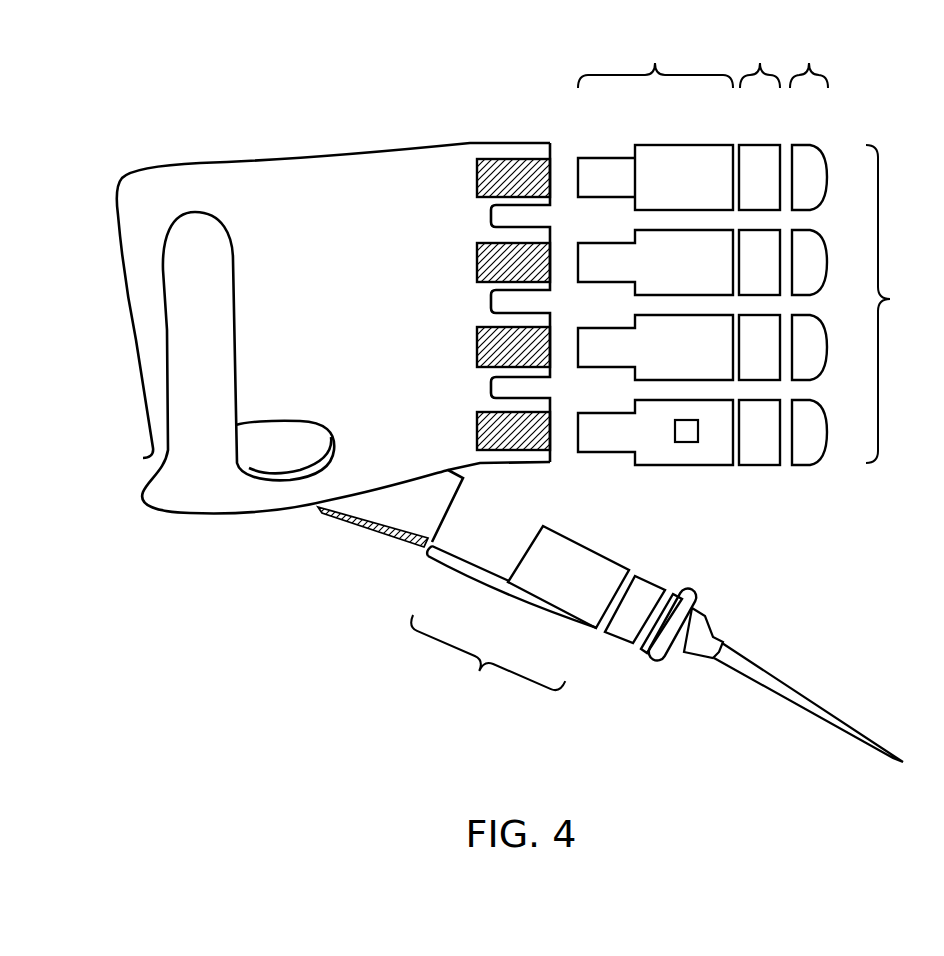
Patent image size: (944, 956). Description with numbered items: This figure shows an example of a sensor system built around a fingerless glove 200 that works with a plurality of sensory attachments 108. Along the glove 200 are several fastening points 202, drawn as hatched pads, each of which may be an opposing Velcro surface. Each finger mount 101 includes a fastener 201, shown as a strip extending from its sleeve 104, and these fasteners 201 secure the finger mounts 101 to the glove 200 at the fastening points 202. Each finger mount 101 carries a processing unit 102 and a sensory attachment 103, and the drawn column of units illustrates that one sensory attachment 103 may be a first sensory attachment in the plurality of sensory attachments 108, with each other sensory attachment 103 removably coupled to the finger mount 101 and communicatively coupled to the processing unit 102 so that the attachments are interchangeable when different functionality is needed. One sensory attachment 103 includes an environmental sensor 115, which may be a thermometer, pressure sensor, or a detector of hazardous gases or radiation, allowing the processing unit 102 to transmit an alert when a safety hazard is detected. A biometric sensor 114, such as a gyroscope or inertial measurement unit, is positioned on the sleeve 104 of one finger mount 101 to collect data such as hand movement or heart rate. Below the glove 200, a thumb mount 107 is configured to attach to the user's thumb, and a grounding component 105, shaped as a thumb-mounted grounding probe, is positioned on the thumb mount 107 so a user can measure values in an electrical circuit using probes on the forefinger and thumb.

The fingerless glove 200 is at (388, 170).
The fastening point 202 is at (507, 168).
The fastener 201 is at (613, 160).
The finger mount 101 is at (570, 558).
The processing unit 102 is at (602, 675).
The sensory attachment 103 is at (809, 121).
The sleeve 104 is at (692, 155).
The grounding component 105 is at (758, 687).
The thumb mount 107 is at (484, 665).
The plurality of sensory attachments 108 is at (752, 305).
The biometric sensor 114 is at (685, 435).
The environmental sensor 115 is at (808, 463).